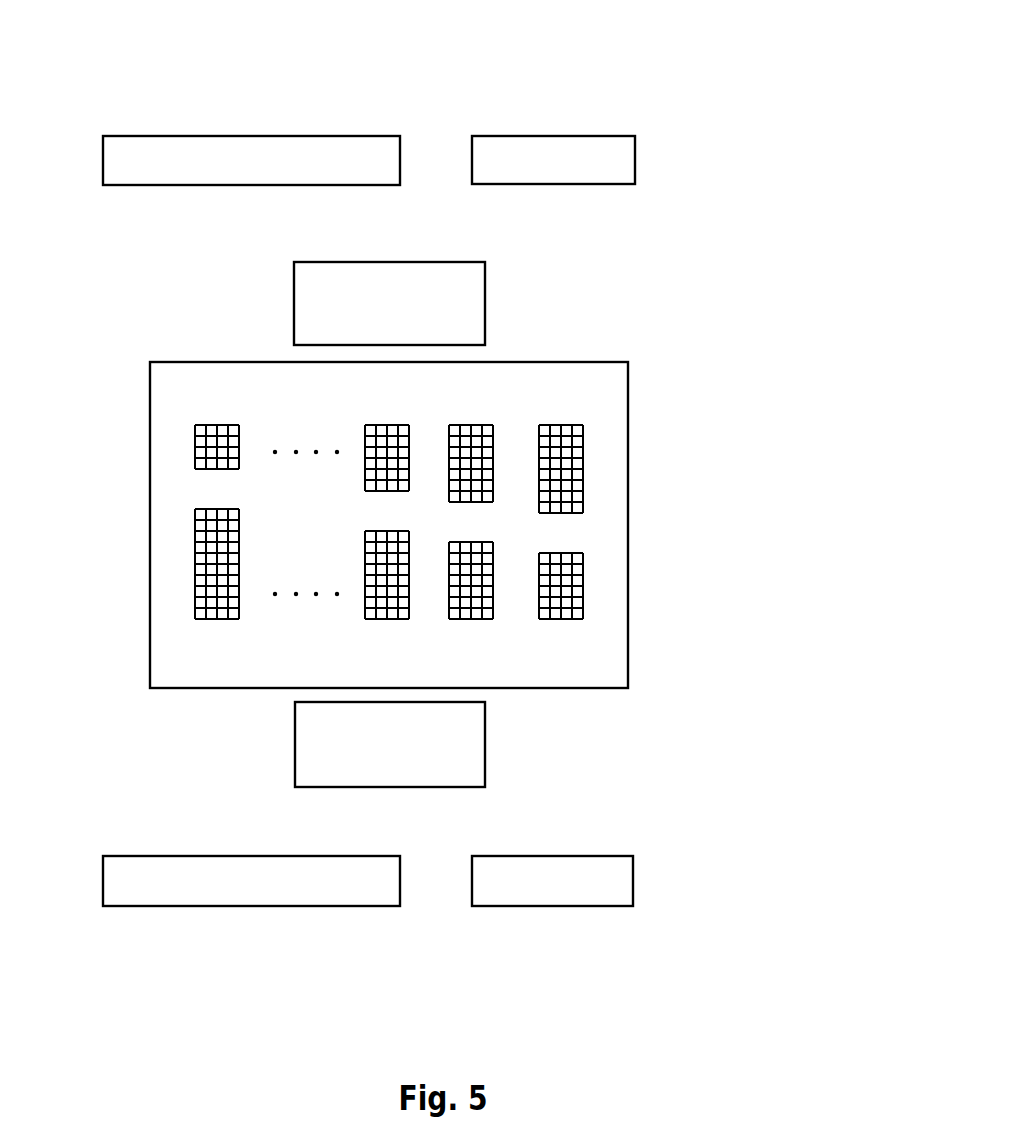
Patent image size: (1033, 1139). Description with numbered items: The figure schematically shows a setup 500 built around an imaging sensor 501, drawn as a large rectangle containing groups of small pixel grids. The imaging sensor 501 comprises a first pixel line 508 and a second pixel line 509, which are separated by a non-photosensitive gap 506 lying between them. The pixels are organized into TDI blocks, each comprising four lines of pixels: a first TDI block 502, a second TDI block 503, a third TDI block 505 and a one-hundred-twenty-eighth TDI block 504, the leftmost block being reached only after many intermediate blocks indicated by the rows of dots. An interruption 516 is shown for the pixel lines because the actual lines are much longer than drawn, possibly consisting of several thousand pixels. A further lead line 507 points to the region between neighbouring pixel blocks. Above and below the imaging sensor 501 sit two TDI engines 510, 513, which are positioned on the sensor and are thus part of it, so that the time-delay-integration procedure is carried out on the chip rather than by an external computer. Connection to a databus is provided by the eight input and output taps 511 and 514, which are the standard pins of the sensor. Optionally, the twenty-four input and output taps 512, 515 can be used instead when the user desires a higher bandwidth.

The setup 500 is at (722, 92).
The imaging sensor 501 is at (620, 362).
The first TDI block 502 is at (570, 620).
The second TDI block 503 is at (490, 627).
The 128th TDI block 504 is at (208, 622).
The third TDI block 505 is at (383, 622).
The non-photosensitive gap 506 is at (512, 455).
The pixel block 507 is at (427, 440).
The first pixel line 508 is at (547, 422).
The second pixel line 509 is at (487, 422).
The TDI engine 510 is at (294, 272).
The eight input and output taps 511 is at (555, 136).
The 24 input and output taps 512 is at (298, 136).
The TDI engine 513 is at (485, 767).
The eight input and output taps 514 is at (573, 906).
The 24 input and output taps 515 is at (278, 906).
The interruption 516 is at (583, 532).